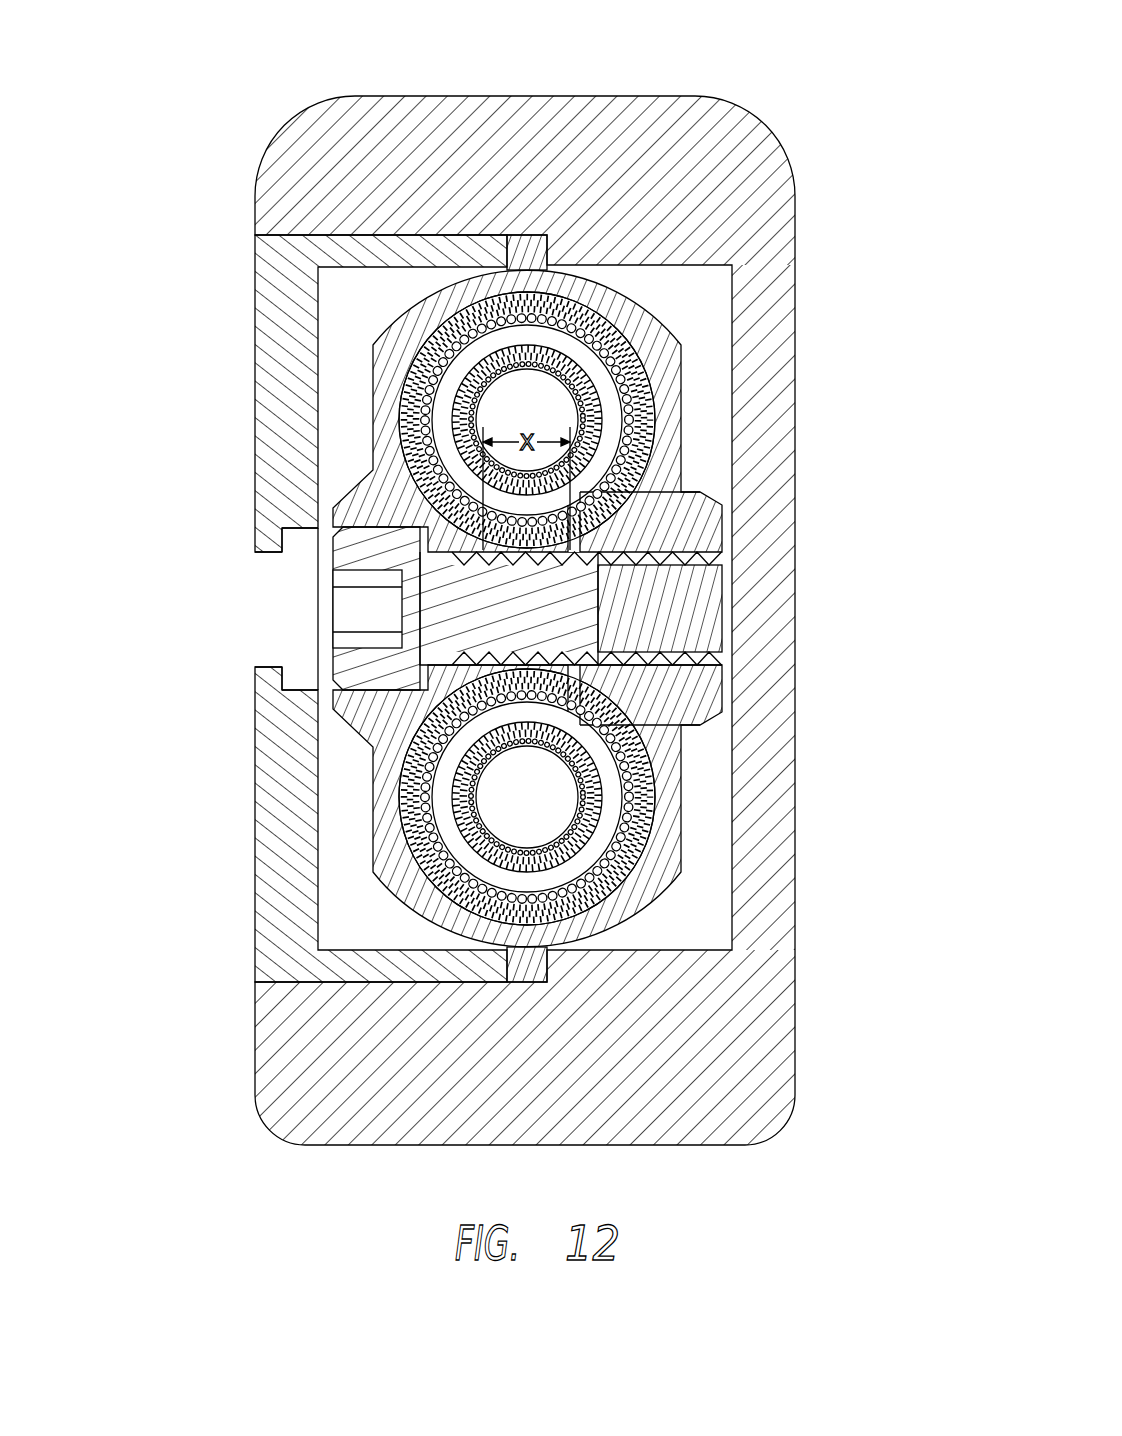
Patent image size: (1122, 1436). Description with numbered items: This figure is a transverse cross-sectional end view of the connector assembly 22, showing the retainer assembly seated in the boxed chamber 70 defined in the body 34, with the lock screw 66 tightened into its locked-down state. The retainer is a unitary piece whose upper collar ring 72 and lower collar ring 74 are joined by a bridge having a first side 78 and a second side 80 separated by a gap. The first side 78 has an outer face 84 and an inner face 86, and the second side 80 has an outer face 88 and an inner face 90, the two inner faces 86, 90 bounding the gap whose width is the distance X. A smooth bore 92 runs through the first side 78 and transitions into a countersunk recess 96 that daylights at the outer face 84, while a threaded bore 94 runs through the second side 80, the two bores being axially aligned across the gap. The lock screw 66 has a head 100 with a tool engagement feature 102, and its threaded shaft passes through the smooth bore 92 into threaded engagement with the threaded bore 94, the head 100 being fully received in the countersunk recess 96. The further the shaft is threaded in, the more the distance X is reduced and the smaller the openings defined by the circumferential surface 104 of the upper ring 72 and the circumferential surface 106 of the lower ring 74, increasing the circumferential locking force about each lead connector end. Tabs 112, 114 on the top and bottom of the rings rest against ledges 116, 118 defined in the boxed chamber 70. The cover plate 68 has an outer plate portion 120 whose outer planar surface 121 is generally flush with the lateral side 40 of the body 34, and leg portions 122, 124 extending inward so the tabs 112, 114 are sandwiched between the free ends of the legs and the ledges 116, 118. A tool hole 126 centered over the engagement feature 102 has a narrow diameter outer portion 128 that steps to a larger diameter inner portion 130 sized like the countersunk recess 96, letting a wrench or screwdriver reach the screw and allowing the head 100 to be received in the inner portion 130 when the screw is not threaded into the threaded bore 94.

The connector assembly 22 is at (812, 96).
The body 34 is at (302, 1098).
The lateral side 40 is at (263, 1062).
The lock screw 66 is at (508, 582).
The cover plate 68 is at (283, 870).
The boxed chamber 70 is at (703, 907).
The upper collar ring 72 is at (633, 323).
The lower collar ring 74 is at (638, 885).
The first side 78 is at (357, 710).
The second side 80 is at (700, 690).
The outer face 84 is at (333, 700).
The inner face 86 is at (395, 441).
The outer face 88 is at (722, 540).
The inner face 90 is at (640, 503).
The smooth bore 92 is at (395, 755).
The threaded bore 94 is at (665, 549).
The countersunk recess 96 is at (378, 508).
The head 100 is at (343, 552).
The tool engagement feature 102 is at (343, 612).
The circumferential surface 104 is at (648, 410).
The circumferential surface 106 is at (582, 912).
The tab 112 is at (523, 262).
The tab 114 is at (527, 975).
The ledge 116 is at (556, 252).
The ledge 118 is at (563, 963).
The outer plate portion 120 is at (257, 767).
The outer planar surface 121 is at (250, 915).
The leg portion 122 is at (385, 235).
The leg portion 124 is at (383, 982).
The tool hole 126 is at (226, 626).
The narrow diameter outer portion 128 is at (267, 575).
The larger diameter inner portion 130 is at (290, 610).